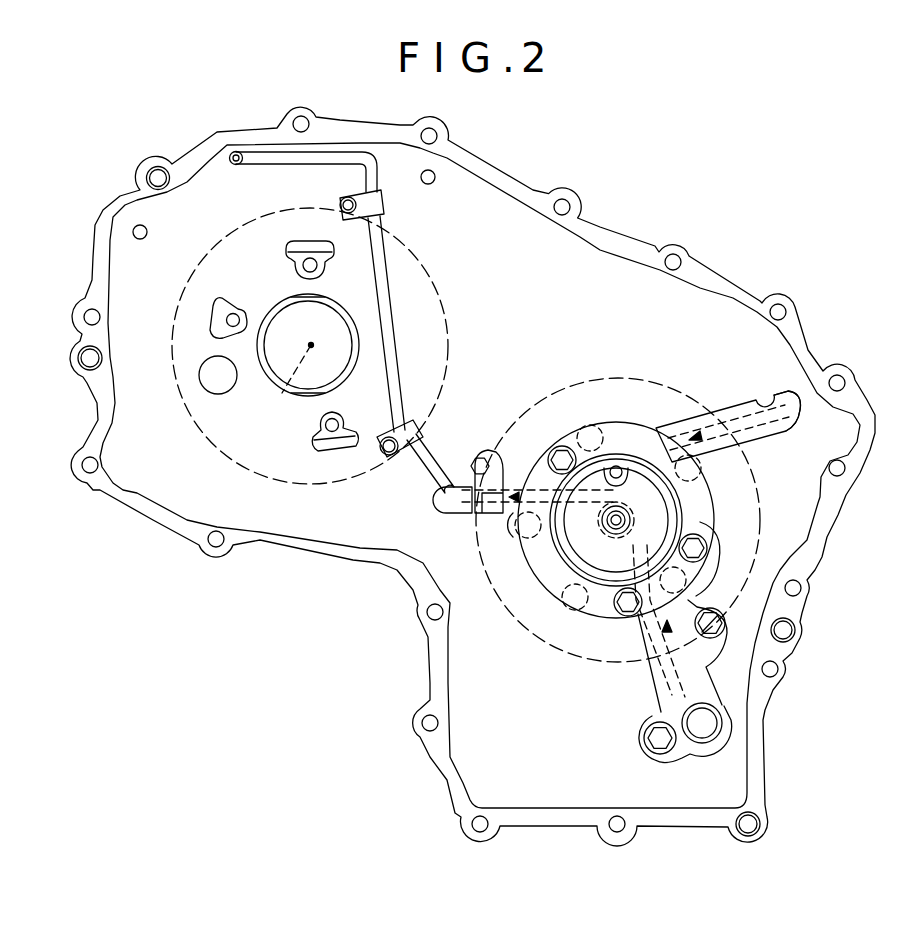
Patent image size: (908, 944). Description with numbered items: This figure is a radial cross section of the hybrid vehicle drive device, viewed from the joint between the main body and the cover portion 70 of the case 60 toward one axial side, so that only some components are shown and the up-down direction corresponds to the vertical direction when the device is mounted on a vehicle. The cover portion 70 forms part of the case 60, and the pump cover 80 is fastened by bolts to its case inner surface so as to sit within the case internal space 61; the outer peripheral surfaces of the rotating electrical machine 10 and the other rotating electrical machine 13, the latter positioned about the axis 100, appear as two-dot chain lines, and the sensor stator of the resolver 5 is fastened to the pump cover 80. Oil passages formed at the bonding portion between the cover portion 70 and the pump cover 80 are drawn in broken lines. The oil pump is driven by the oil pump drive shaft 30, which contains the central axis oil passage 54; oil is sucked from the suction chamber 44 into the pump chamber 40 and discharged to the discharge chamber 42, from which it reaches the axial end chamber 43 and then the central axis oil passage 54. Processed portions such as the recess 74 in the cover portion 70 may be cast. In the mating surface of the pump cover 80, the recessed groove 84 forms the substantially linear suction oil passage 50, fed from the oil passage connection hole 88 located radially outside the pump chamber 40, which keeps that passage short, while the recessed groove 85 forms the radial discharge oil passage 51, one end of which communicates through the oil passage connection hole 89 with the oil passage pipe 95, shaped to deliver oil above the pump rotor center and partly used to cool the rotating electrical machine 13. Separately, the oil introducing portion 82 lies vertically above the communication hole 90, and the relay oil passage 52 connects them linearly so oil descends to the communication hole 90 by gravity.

The resolver 5 is at (540, 583).
The rotating electrical machine 10 is at (628, 385).
The rotating electrical machine 13 is at (441, 293).
The oil pump drive shaft 30 is at (625, 517).
The pump chamber 40 is at (590, 627).
The discharge chamber 42 is at (520, 527).
The axial end chamber 43 is at (622, 445).
The suction chamber 44 is at (622, 620).
The suction oil passage 50 is at (672, 686).
The radial discharge oil passage 51 is at (470, 503).
The relay oil passage 52 is at (727, 412).
The central axis oil passage 54 is at (603, 533).
The case 60 is at (461, 476).
The case internal space 61 is at (577, 333).
The cover portion 70 is at (613, 237).
The recess 74 is at (706, 410).
The pump cover 80 is at (727, 716).
The oil introducing portion 82 is at (780, 428).
The recessed groove 84 is at (722, 632).
The recessed groove 85 is at (488, 477).
The oil passage connection hole 88 is at (702, 728).
The oil passage connection hole 89 is at (450, 497).
The communication hole 90 is at (616, 466).
The oil passage pipe 95 is at (393, 357).
The axis 100 is at (277, 395).